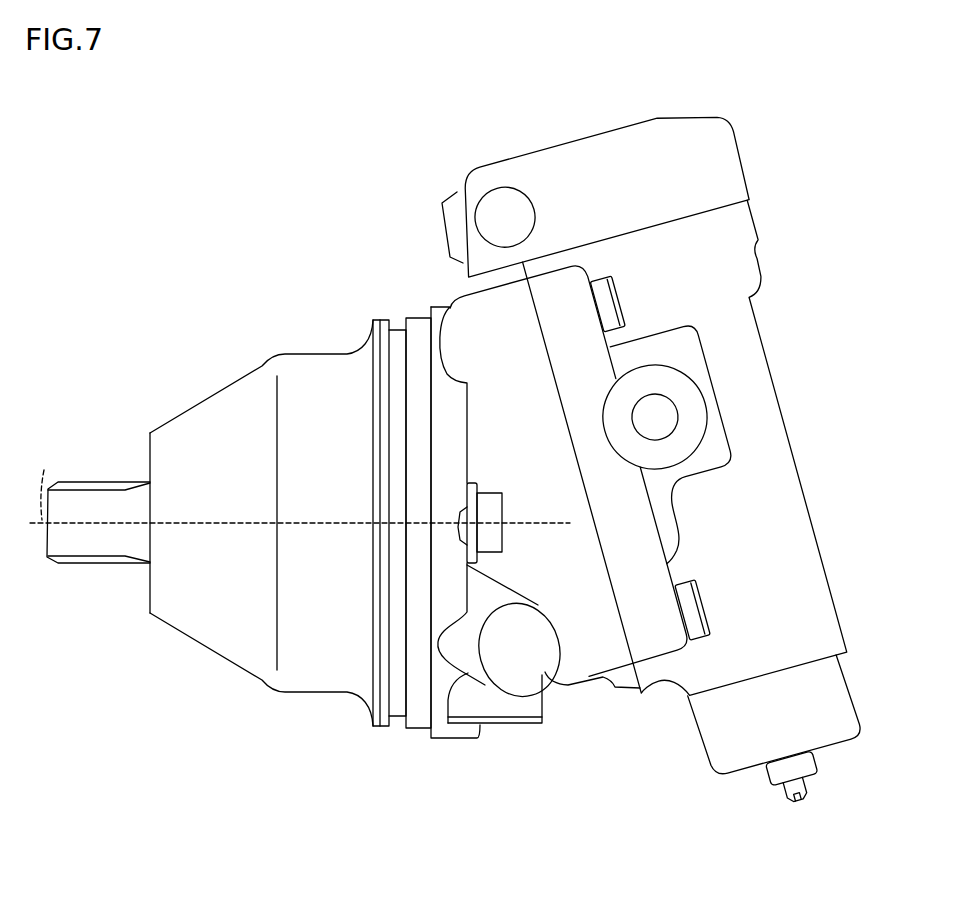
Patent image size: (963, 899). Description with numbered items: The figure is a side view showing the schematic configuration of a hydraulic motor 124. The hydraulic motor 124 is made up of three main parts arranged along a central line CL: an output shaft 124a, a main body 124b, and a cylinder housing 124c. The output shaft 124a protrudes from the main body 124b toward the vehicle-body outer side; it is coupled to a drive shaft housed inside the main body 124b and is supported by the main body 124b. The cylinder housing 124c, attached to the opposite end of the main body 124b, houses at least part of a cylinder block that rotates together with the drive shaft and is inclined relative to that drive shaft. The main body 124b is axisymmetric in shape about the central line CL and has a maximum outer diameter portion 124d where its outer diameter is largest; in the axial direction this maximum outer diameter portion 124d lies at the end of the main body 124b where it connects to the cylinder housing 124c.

The hydraulic motor 124 is at (743, 112).
The output shaft 124a is at (150, 626).
The main body 124b is at (432, 756).
The cylinder housing 124c is at (858, 814).
The maximum outer diameter portion 124d is at (413, 317).